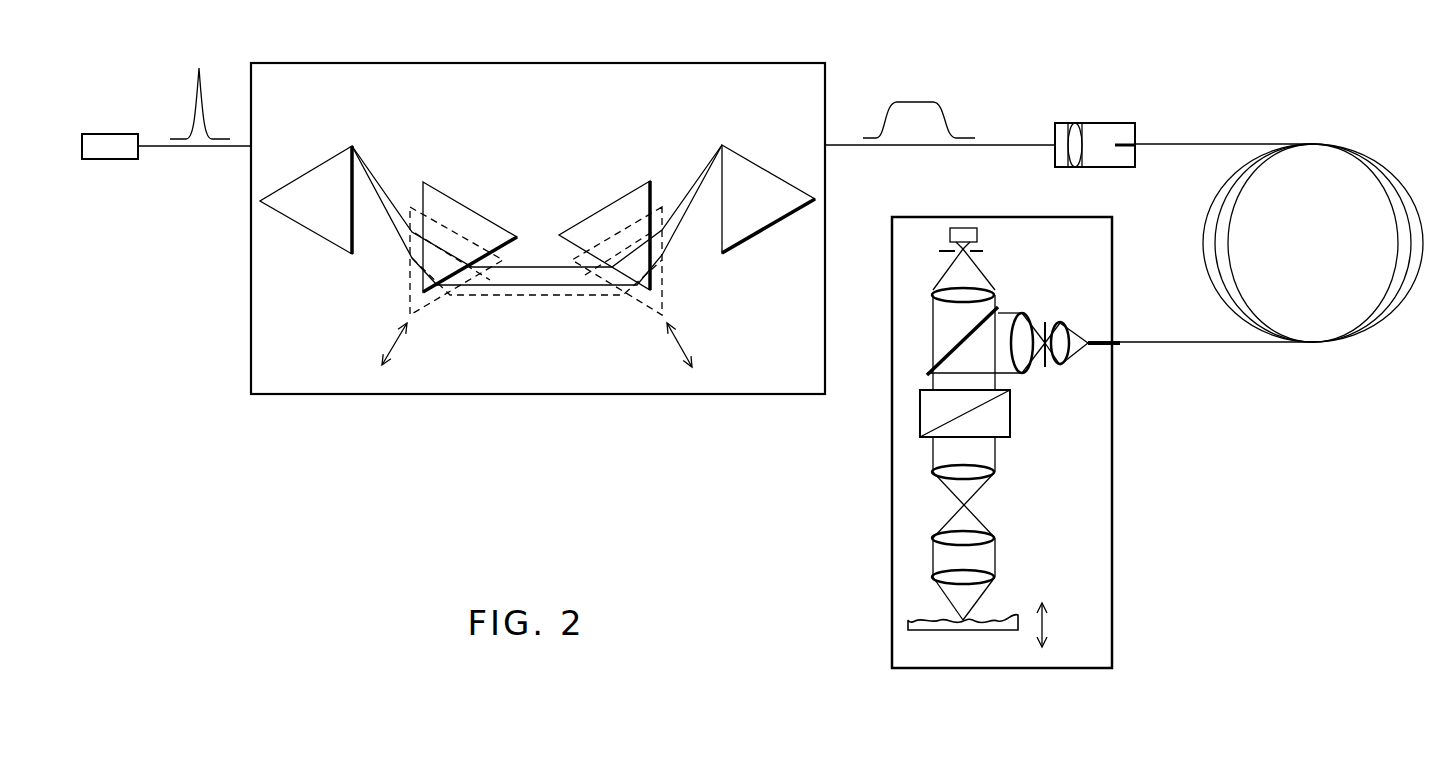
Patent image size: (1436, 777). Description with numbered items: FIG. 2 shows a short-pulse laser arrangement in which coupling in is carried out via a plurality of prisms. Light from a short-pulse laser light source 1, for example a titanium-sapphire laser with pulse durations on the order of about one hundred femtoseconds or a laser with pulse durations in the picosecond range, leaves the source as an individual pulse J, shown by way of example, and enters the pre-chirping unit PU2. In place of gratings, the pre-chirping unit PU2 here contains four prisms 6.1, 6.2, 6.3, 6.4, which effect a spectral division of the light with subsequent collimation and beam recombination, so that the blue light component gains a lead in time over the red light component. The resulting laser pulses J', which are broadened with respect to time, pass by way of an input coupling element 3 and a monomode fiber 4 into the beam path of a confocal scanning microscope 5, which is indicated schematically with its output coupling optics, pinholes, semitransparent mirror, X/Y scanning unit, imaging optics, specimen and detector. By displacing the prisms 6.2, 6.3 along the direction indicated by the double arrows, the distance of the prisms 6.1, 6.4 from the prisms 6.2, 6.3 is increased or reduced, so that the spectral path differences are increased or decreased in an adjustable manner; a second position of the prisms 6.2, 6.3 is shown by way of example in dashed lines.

The short-pulse laser light source 1 is at (117, 161).
The individual pulse J is at (200, 81).
The pre-chirping unit PU2 is at (658, 394).
The first prism 6.1 is at (308, 230).
The second prism 6.2 is at (464, 203).
The third prism 6.3 is at (620, 198).
The fourth prism 6.4 is at (750, 240).
The broadened laser pulse J' is at (919, 95).
The input coupling element 3 is at (1115, 123).
The monomode fiber 4 is at (1223, 342).
The confocal scanning microscope 5 is at (1115, 589).